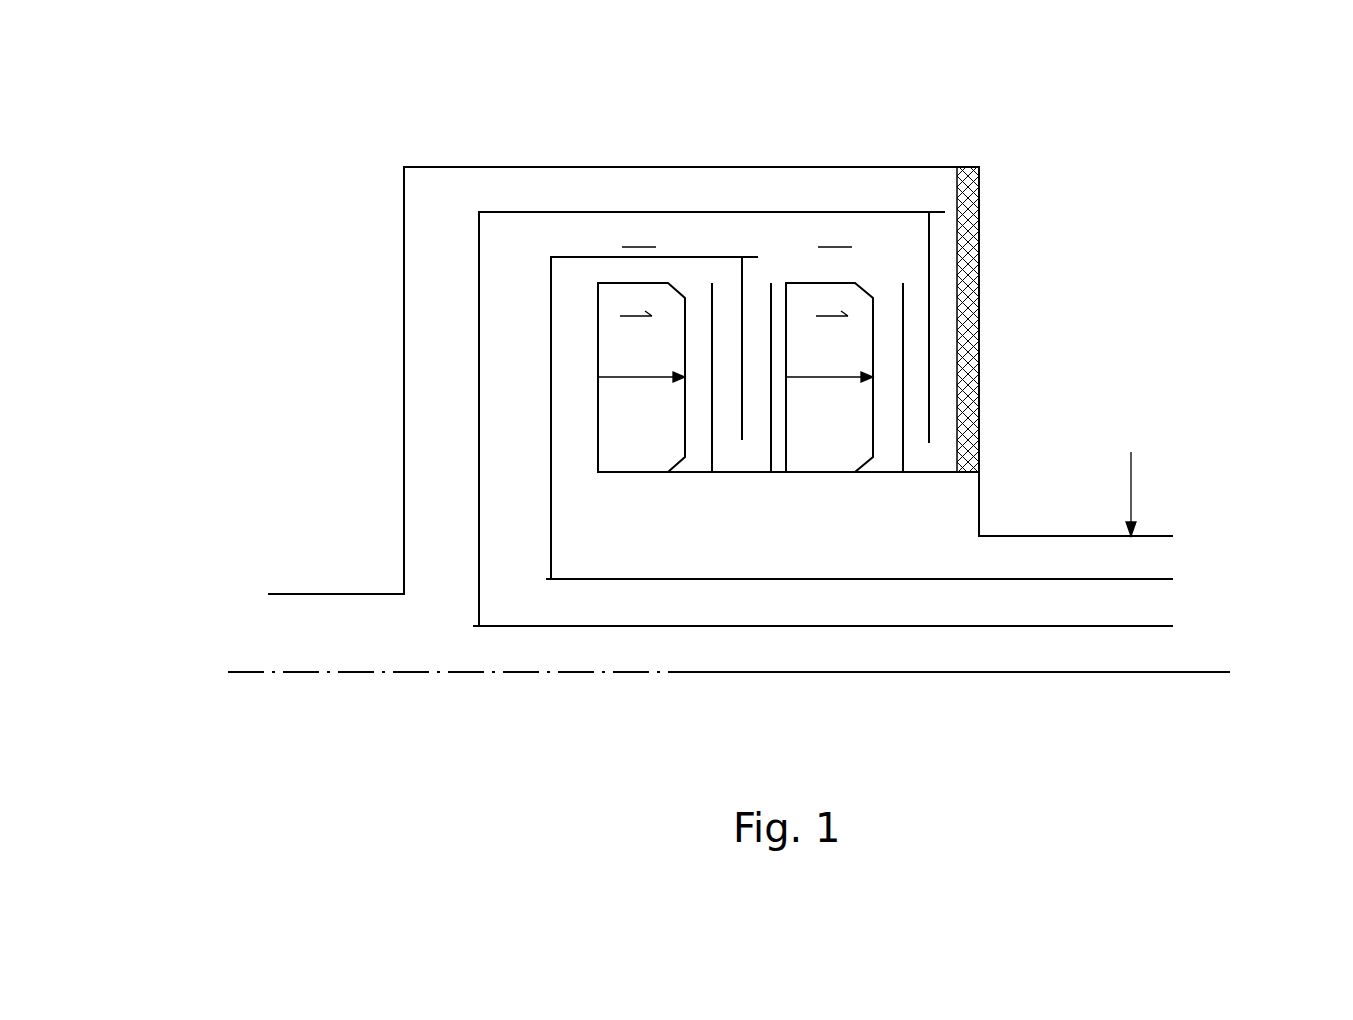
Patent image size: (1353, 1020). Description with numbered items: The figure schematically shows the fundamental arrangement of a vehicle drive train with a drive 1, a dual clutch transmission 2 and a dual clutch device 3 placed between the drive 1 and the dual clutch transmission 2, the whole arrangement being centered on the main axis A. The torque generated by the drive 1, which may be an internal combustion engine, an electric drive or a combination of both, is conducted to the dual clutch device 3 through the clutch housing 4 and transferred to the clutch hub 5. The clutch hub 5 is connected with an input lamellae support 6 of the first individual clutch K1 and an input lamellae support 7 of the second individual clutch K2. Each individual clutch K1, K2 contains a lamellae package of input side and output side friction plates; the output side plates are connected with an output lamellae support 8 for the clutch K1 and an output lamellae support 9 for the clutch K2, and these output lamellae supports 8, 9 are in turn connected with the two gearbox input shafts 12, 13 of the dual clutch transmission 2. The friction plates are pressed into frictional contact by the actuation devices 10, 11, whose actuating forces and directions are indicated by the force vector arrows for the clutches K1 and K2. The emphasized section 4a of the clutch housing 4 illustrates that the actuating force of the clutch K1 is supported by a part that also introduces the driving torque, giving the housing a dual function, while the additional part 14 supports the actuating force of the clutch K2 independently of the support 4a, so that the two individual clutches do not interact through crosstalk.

The drive 1 is at (220, 672).
The dual clutch transmission 2 is at (1237, 672).
The dual clutch device 3 is at (600, 137).
The clutch housing 4 is at (430, 167).
The section of the clutch housing 4a is at (972, 338).
The clutch hub 5 is at (932, 474).
The input lamellae support 6 is at (903, 293).
The input lamellae support 7 is at (712, 300).
The output lamellae support 8 is at (920, 212).
The output lamellae support 9 is at (572, 257).
The actuation device 10 is at (823, 450).
The actuation device 11 is at (637, 450).
The gearbox input shaft 12 is at (1165, 579).
The gearbox input shaft 13 is at (1165, 626).
The additional part 14 is at (771, 340).
The main axis A is at (330, 674).
The first individual clutch K1 is at (834, 287).
The second individual clutch K2 is at (638, 287).